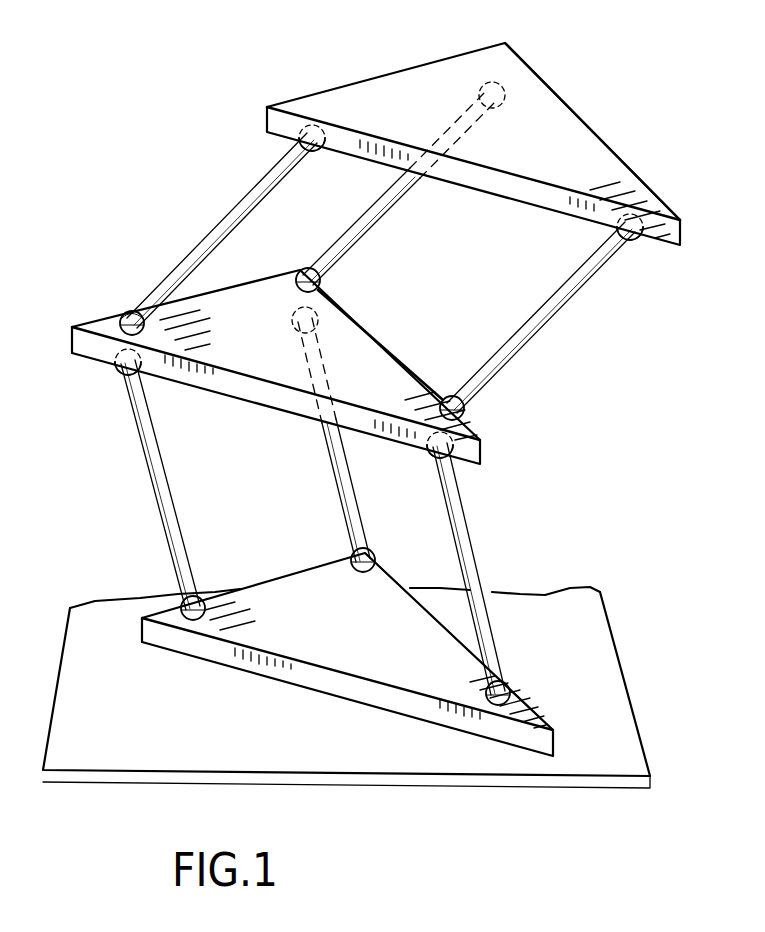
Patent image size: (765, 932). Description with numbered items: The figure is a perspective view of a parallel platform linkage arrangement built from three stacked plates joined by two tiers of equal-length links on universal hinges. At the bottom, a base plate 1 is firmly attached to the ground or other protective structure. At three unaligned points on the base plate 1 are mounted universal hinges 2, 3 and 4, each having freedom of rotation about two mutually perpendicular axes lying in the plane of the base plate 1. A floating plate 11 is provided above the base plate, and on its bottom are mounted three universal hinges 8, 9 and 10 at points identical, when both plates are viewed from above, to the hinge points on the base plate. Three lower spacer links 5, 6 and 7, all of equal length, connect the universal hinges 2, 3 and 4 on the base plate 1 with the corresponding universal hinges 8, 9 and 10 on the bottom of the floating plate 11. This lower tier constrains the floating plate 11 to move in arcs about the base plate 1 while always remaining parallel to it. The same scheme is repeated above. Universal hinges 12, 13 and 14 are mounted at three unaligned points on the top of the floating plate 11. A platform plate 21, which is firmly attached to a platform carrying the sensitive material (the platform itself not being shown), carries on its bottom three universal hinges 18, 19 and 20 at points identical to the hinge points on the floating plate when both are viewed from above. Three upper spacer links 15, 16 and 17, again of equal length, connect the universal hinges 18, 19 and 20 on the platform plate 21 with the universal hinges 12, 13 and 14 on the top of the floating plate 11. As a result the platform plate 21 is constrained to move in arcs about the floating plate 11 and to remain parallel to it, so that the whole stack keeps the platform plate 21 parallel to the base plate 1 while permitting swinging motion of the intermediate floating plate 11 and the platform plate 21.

The base plate 1 is at (358, 664).
The universal hinge 2 is at (202, 597).
The universal hinge 3 is at (372, 551).
The universal hinge 4 is at (512, 684).
The lower spacer link 5 is at (173, 497).
The lower spacer link 6 is at (330, 470).
The lower spacer link 7 is at (479, 553).
The universal hinge 8 is at (118, 371).
The universal hinge 9 is at (292, 324).
The universal hinge 10 is at (433, 455).
The floating plate 11 is at (362, 320).
The universal hinge 12 is at (126, 312).
The universal hinge 13 is at (310, 266).
The universal hinge 14 is at (478, 413).
The upper spacer link 15 is at (232, 214).
The upper spacer link 16 is at (378, 226).
The upper spacer link 17 is at (548, 322).
The universal hinge 18 is at (318, 149).
The universal hinge 19 is at (482, 100).
The universal hinge 20 is at (635, 240).
The platform plate 21 is at (558, 89).